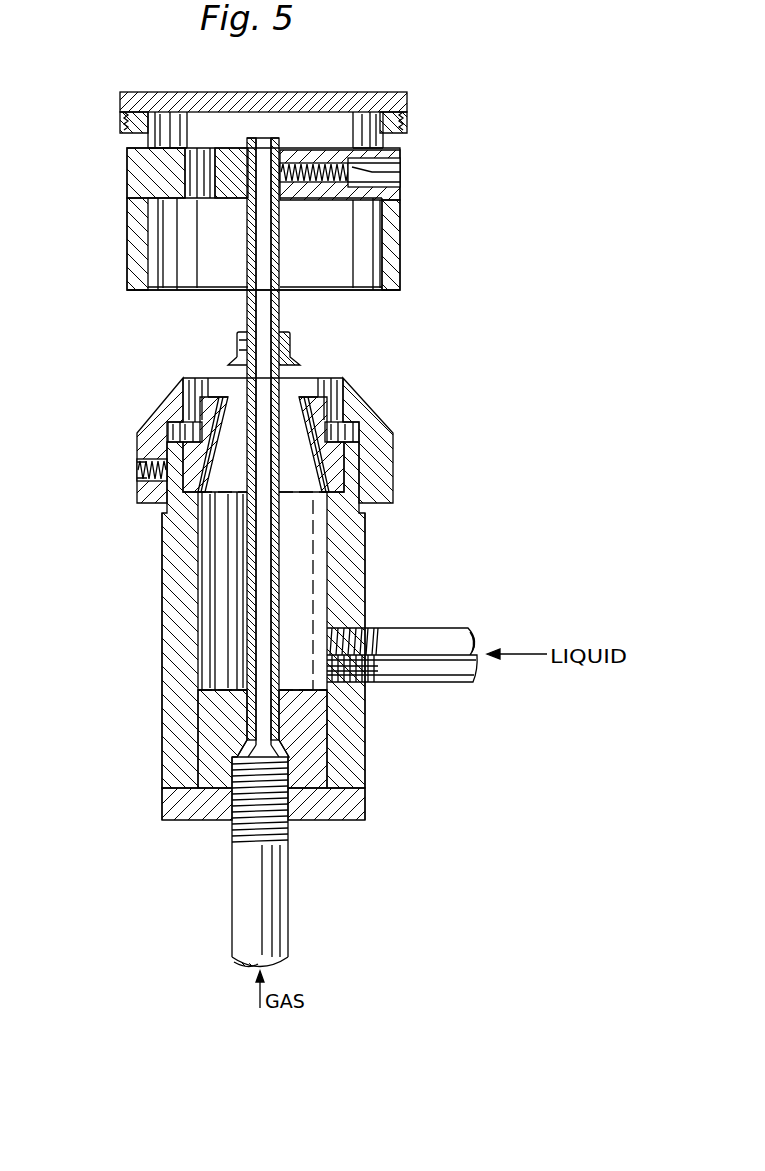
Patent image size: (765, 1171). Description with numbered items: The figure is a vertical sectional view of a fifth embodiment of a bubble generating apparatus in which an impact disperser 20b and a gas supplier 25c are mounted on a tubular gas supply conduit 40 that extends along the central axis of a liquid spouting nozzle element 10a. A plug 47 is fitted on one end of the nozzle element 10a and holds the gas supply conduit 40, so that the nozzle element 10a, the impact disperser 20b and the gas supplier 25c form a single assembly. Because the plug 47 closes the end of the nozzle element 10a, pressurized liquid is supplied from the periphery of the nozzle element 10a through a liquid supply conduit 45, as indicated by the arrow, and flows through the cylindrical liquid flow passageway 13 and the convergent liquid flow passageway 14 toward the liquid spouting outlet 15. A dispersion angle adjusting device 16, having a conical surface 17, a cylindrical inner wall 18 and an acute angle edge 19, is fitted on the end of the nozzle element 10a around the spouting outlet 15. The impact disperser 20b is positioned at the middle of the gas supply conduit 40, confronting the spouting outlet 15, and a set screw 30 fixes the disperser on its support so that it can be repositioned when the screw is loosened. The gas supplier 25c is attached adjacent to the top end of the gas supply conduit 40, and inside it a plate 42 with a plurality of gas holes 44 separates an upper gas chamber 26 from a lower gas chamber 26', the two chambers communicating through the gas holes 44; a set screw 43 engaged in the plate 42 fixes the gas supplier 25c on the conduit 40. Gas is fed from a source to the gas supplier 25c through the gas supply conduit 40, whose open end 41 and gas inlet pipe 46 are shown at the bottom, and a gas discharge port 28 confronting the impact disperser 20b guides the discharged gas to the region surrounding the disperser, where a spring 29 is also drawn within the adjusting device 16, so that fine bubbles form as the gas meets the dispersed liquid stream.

The liquid spouting nozzle element 10a is at (154, 580).
The cylindrical liquid flow passageway 13 is at (304, 620).
The convergent liquid flow passageway 14 is at (308, 483).
The liquid spouting outlet 15 is at (338, 379).
The dispersion angle adjusting device 16 is at (402, 475).
The conical surface 17 is at (386, 418).
The cylindrical inner wall 18 is at (190, 397).
The acute angle edge 19 is at (182, 378).
The impact disperser 20b is at (303, 343).
The gas supplier 25c is at (408, 250).
The upper gas chamber 26 is at (265, 130).
The lower gas chamber 26' is at (265, 244).
The gas discharge port 28 is at (317, 281).
The spring 29 is at (137, 468).
The set screw 30 is at (237, 340).
The tubular gas supply conduit 40 is at (272, 520).
The lowermost open end 41 is at (268, 141).
The plate 42 is at (172, 185).
The set screw 43 is at (380, 183).
The gas holes 44 is at (202, 163).
The liquid supply conduit 45 is at (428, 628).
The gas inlet pipe 46 is at (294, 888).
The plug 47 is at (180, 814).